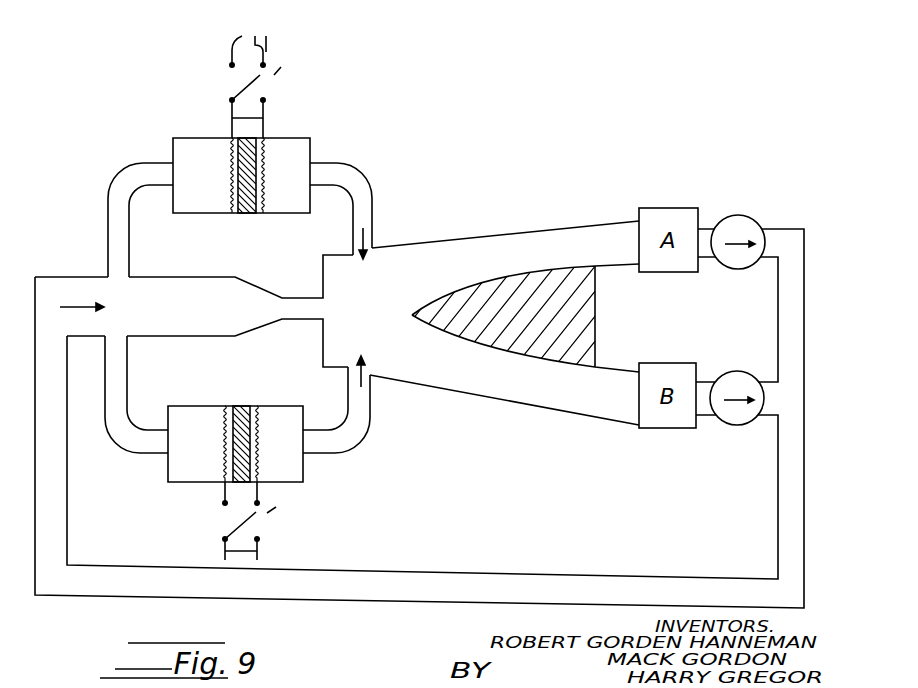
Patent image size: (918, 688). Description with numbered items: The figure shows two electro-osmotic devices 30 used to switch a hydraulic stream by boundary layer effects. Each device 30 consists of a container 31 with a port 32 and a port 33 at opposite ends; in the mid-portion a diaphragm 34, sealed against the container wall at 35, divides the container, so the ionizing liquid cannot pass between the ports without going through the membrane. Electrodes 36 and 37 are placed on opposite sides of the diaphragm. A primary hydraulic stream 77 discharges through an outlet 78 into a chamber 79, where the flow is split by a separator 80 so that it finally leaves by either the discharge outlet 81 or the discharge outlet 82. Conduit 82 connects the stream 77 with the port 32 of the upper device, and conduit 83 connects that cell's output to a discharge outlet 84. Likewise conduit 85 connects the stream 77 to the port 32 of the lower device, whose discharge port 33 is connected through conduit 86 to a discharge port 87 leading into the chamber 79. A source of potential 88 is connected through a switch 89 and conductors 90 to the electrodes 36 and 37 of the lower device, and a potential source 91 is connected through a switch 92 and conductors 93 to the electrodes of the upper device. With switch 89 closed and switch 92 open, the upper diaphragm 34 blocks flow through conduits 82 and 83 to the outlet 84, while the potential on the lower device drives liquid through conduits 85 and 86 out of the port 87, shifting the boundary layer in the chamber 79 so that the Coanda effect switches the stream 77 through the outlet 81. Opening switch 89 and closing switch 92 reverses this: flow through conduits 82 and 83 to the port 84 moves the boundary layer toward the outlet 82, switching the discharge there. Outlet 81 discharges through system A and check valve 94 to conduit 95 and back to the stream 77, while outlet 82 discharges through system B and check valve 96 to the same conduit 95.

The electro-osmotic device 30 is at (283, 419).
The container 31 is at (187, 421).
The port 32 is at (174, 174).
The port 33 is at (313, 181).
The diaphragm 34 is at (252, 205).
The seal 35 is at (244, 216).
The electrode 36 is at (232, 180).
The electrode 37 is at (266, 183).
The primary hydraulic stream 77 is at (181, 306).
The outlet 78 is at (300, 308).
The chamber 79 is at (363, 311).
The separator 80 is at (597, 307).
The discharge outlet 81 is at (522, 248).
The conduit 82 is at (106, 218).
The conduit 83 is at (373, 195).
The discharge outlet 84 is at (375, 240).
The conduit 85 is at (110, 385).
The conduit 86 is at (371, 437).
The discharge port 87 is at (365, 378).
The source of potential 88 is at (225, 548).
The switch 89 is at (279, 516).
The conductors 90 is at (257, 496).
The potential source 91 is at (249, 37).
The switch 92 is at (282, 90).
The conductors 93 is at (266, 112).
The check valve 94 is at (748, 216).
The conduit 95 is at (778, 517).
The check valve 96 is at (737, 427).